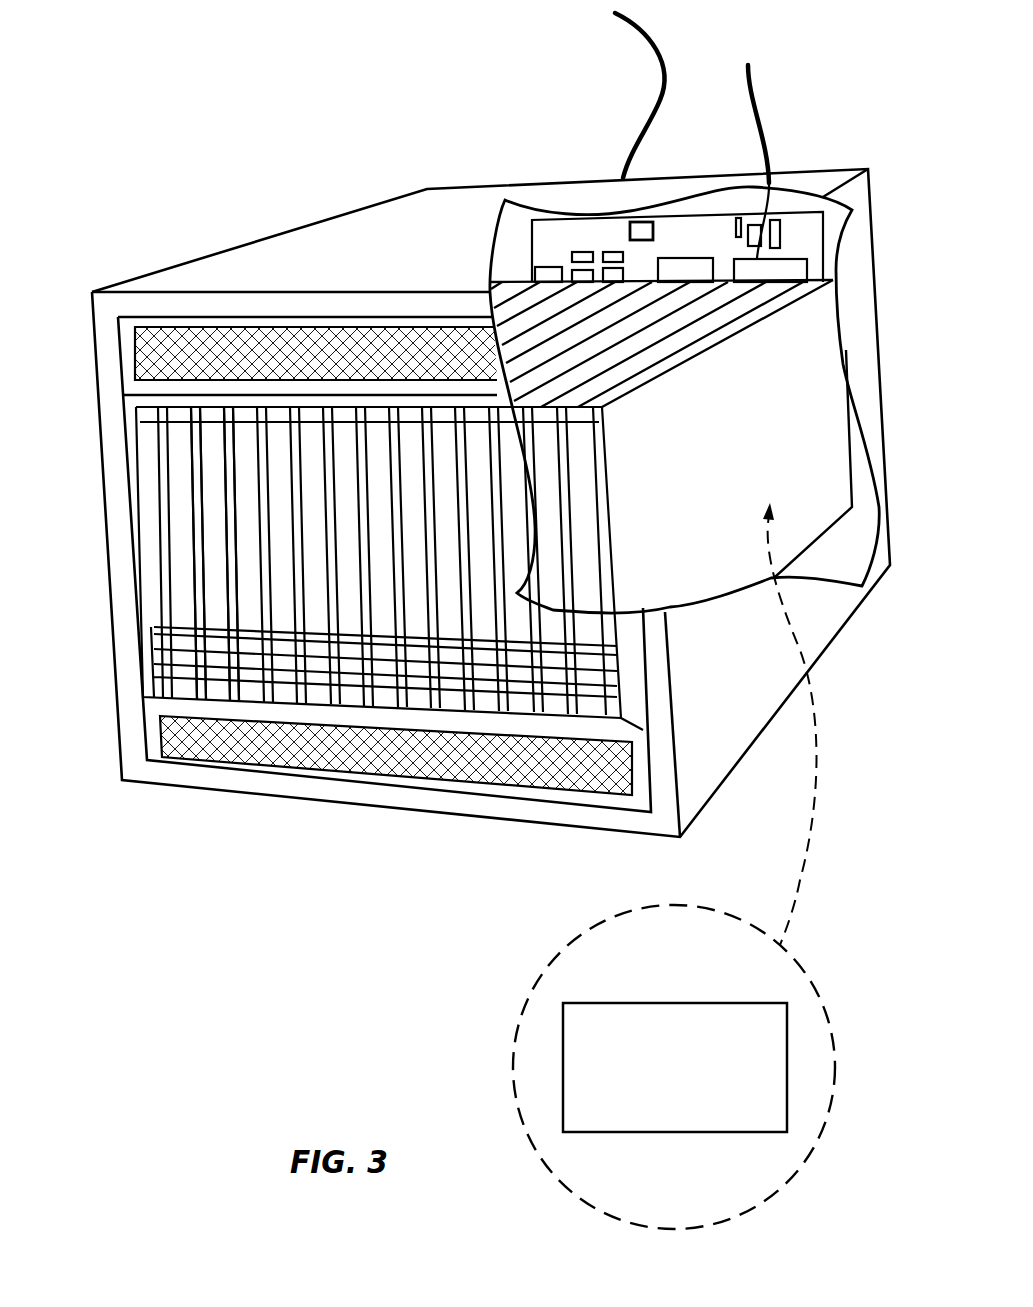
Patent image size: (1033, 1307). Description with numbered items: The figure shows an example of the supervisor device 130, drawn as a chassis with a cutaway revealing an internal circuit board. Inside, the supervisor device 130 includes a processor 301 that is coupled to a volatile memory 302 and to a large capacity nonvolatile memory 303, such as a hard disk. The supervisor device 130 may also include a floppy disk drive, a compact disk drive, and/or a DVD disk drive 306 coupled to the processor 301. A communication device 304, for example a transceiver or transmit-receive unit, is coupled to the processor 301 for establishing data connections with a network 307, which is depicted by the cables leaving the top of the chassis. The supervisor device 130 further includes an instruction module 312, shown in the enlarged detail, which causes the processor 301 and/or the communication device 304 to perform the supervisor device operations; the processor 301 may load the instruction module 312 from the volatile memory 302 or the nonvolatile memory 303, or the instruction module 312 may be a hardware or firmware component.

The supervisor device 130 is at (168, 72).
The processor 301 is at (684, 267).
The volatile memory 302 is at (789, 268).
The large capacity nonvolatile memory 303 is at (225, 501).
The communication device 304 is at (545, 270).
The DVD disk drive 306 is at (195, 557).
The network 307 is at (657, 38).
The instruction module 312 is at (685, 1003).